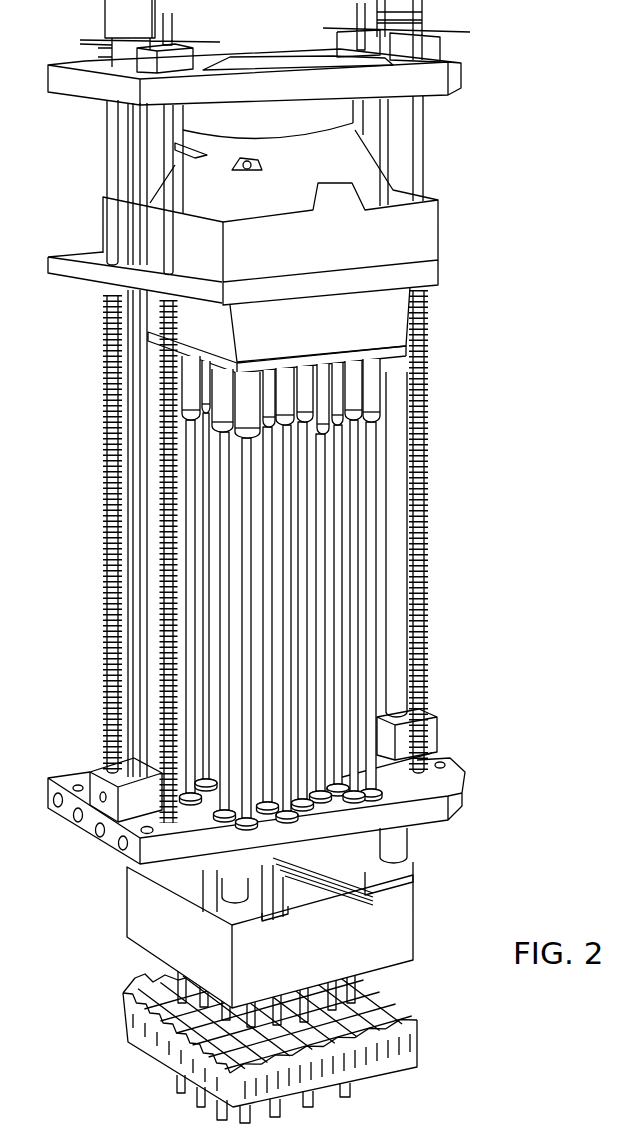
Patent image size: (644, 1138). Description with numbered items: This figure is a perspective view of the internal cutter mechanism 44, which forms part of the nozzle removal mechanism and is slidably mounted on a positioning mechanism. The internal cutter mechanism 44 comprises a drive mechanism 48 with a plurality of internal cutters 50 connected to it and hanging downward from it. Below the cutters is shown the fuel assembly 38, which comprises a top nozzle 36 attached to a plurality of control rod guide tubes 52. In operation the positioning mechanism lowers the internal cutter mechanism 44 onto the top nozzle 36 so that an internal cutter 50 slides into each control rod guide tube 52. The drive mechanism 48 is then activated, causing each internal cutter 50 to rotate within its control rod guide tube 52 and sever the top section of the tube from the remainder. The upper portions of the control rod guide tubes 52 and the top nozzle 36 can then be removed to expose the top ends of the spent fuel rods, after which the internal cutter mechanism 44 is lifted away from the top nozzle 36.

The top nozzle 36 is at (398, 929).
The fuel assembly 38 is at (385, 1085).
The internal cutter mechanism 44 is at (440, 343).
The drive mechanism 48 is at (420, 240).
The internal cutter 50 is at (353, 543).
The control rod guide tube 52 is at (347, 993).